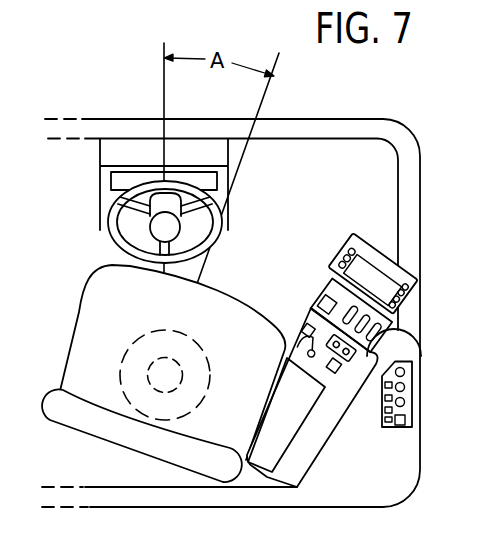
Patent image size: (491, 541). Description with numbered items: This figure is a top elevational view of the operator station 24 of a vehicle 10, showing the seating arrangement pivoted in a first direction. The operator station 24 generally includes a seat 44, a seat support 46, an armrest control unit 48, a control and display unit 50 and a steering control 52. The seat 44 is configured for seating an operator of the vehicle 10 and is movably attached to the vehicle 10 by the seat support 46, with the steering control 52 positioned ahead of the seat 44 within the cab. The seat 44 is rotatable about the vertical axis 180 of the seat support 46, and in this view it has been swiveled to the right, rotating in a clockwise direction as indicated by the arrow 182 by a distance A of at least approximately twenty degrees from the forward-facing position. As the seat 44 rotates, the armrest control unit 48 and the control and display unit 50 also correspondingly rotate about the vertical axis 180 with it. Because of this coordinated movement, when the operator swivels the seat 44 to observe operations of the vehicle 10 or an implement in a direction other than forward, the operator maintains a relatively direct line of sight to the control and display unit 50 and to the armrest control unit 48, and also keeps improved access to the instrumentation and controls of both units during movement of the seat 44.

The vehicle 10 is at (113, 95).
The operator station 24 is at (75, 285).
The seat 44 is at (78, 312).
The seat support 46 is at (128, 352).
The armrest control unit 48 is at (304, 318).
The control and display unit 50 is at (351, 232).
The steering control 52 is at (112, 223).
The vertical axis 180 is at (163, 376).
The arrow 182 is at (276, 266).